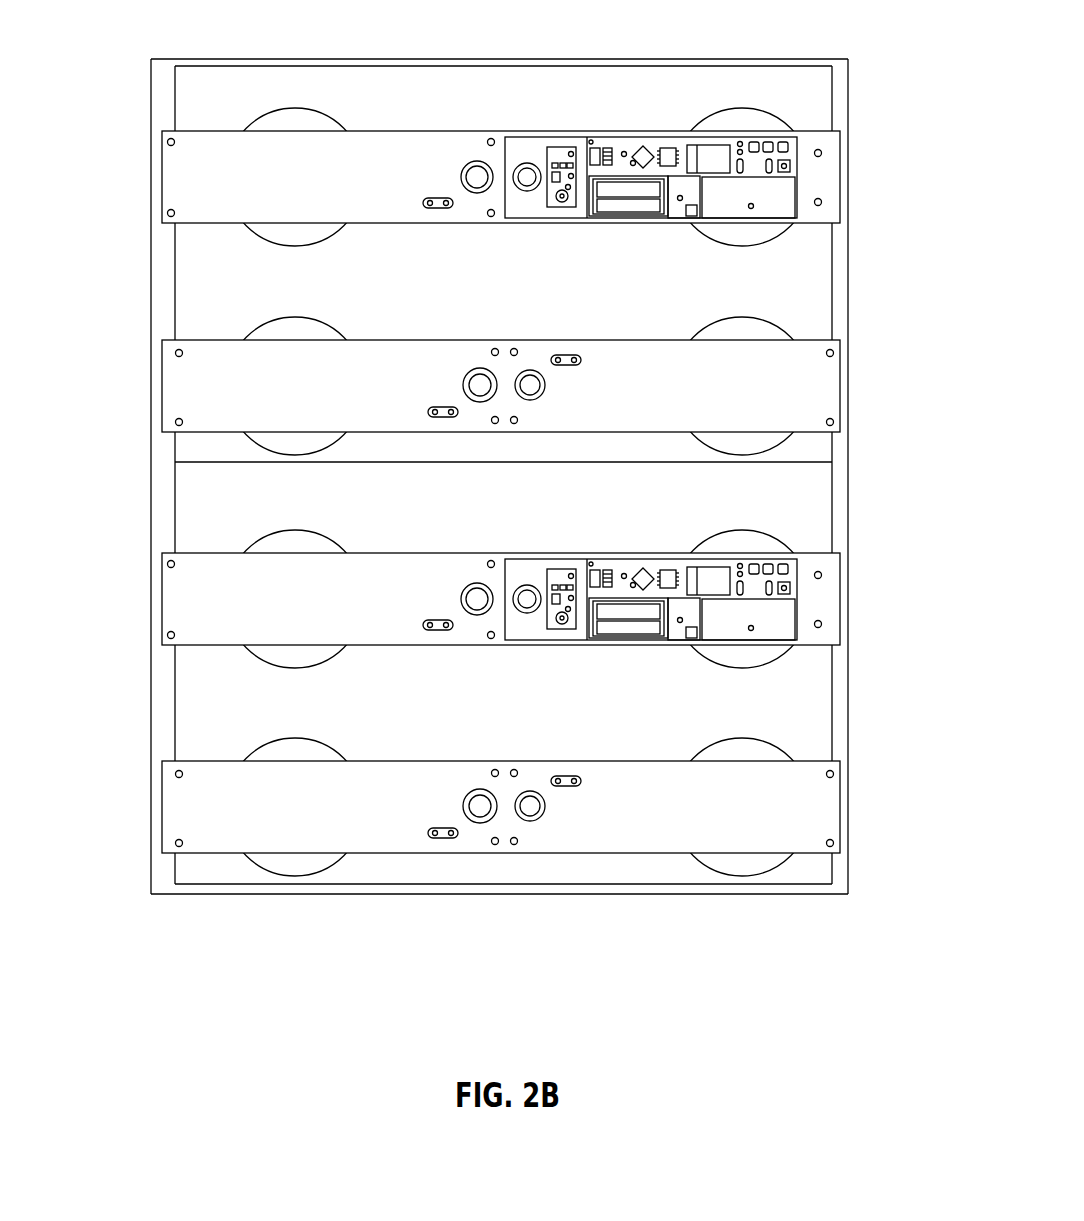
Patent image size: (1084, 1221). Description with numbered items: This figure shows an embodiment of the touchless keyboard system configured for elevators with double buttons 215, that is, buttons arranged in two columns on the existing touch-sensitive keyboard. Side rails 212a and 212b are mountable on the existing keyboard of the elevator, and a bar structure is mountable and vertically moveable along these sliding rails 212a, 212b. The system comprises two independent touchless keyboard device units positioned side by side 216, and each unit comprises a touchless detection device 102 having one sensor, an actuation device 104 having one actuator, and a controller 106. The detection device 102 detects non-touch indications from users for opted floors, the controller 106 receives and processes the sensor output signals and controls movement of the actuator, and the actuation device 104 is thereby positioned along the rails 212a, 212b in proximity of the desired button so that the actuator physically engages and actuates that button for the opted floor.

The touchless detection device 102 is at (476, 161).
The actuation device 104 is at (718, 150).
The controller 106 is at (620, 148).
The sliding rail 212a is at (150, 87).
The sliding rail 212b is at (849, 87).
The double buttons 215 is at (299, 860).
The touchless keyboard device units positioned side by side 216 is at (708, 417).